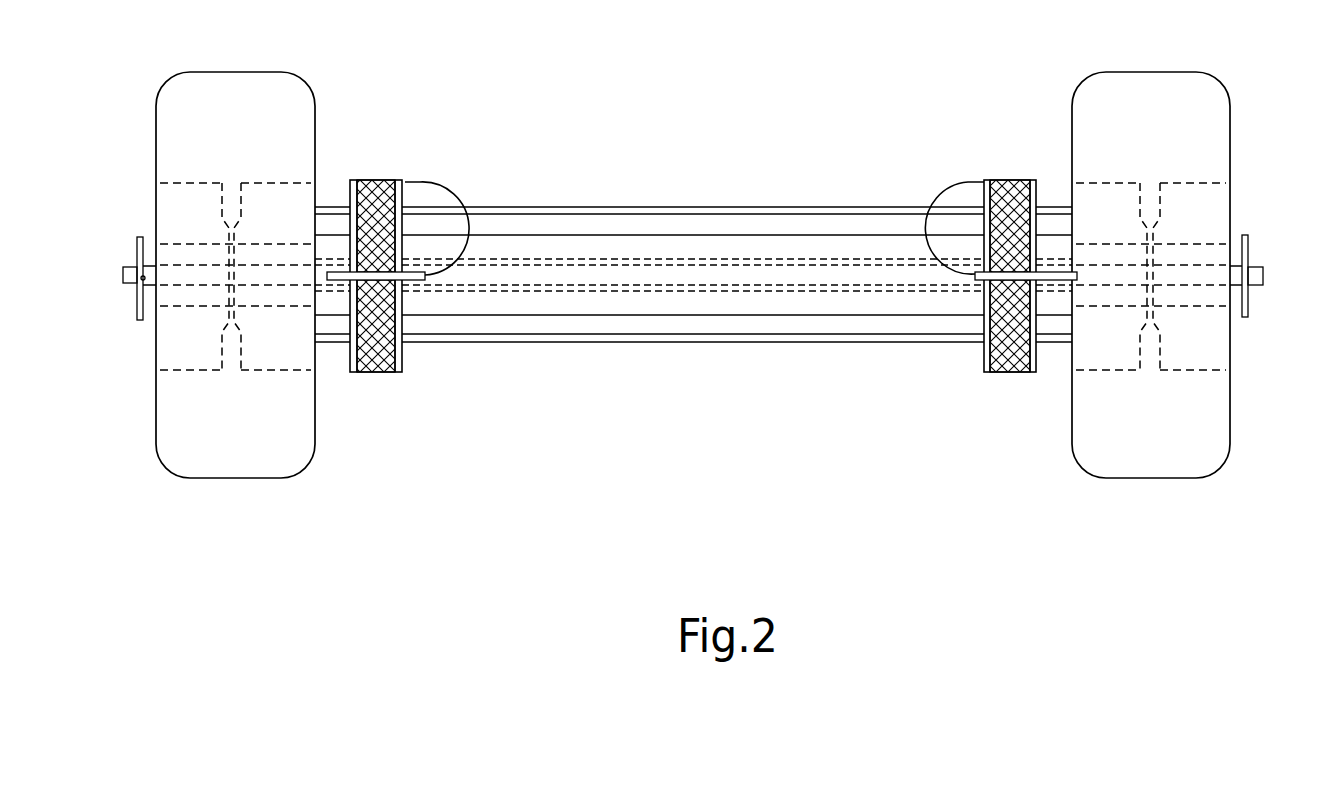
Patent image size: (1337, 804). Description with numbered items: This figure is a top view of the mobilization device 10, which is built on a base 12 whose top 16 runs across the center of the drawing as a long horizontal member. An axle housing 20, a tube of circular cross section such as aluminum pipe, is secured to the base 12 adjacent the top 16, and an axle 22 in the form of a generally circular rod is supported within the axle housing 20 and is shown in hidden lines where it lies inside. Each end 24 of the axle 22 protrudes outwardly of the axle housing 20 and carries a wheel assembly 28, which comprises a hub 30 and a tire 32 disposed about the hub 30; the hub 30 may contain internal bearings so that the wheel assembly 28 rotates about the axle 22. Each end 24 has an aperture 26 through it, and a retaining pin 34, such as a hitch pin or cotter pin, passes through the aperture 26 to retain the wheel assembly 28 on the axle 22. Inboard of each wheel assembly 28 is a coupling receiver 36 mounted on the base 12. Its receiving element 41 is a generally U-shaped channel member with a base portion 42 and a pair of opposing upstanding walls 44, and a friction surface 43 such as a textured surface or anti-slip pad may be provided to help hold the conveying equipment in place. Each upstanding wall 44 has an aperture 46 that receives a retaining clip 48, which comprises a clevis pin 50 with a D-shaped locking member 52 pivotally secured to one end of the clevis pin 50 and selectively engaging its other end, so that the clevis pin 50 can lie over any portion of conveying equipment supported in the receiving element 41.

The mobilization device 10 is at (839, 111).
The base 12 is at (667, 203).
The top 16 is at (627, 343).
The axle housing 20 is at (772, 293).
The axle 22 is at (822, 288).
The end 24 is at (126, 264).
The aperture 26 is at (141, 279).
The wheel assembly 28 is at (321, 104).
The hub 30 is at (310, 192).
The tire 32 is at (316, 455).
The retaining pin 34 is at (137, 320).
The coupling receiver 36 is at (396, 379).
The receiving element 41 is at (407, 182).
The base portion 42 is at (377, 181).
The friction surface 43 is at (1001, 375).
The upstanding wall 44 is at (352, 373).
The aperture 46 is at (400, 283).
The retaining clip 48 is at (335, 286).
The clevis pin 50 is at (427, 278).
The D-shaped locking member 52 is at (455, 188).